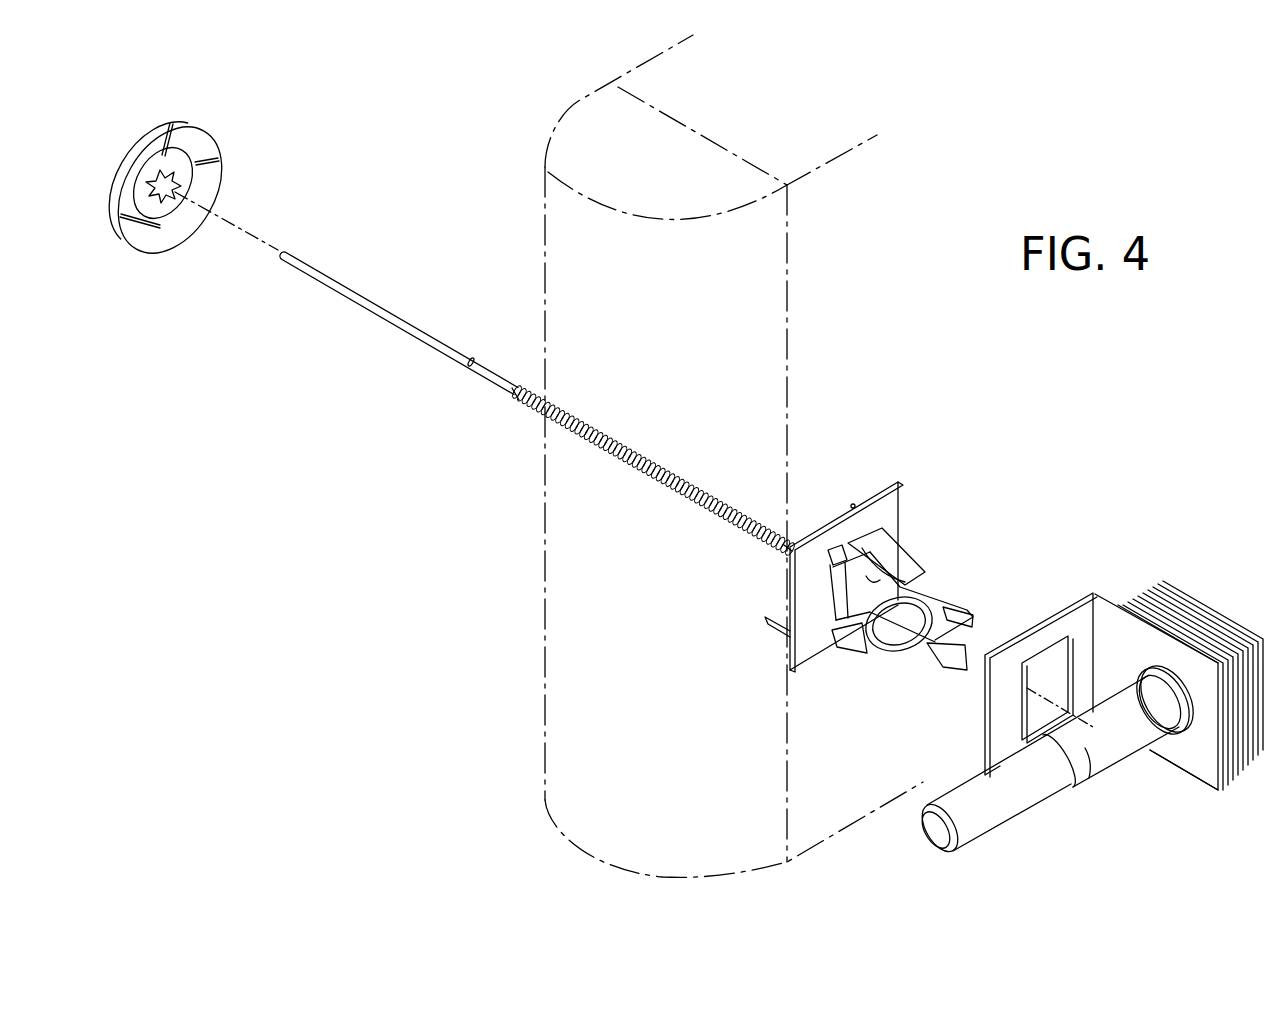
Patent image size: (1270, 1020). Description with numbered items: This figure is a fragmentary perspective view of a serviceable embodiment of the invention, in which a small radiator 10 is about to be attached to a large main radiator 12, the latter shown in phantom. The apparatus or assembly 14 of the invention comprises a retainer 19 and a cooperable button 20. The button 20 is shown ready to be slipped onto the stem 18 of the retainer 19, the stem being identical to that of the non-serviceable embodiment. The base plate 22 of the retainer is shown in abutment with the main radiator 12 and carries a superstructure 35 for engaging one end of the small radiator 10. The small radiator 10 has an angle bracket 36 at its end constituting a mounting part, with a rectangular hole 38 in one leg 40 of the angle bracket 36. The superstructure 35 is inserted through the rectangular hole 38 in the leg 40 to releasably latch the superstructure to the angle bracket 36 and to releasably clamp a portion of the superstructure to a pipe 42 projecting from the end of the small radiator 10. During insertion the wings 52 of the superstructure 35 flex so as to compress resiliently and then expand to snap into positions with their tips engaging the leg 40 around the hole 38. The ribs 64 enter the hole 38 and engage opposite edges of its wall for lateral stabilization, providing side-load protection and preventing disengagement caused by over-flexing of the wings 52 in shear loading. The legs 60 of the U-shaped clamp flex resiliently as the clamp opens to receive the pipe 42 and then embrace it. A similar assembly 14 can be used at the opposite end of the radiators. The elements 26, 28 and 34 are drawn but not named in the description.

The small radiator 10 is at (1203, 563).
The main radiator 12 is at (742, 328).
The apparatus or assembly 14 is at (240, 126).
The stem 18 is at (508, 405).
The retainer 19 is at (746, 541).
The button 20 is at (128, 265).
The base plate 22 is at (893, 502).
The spring 26 is at (668, 490).
The pin shaft 28 is at (366, 314).
The plate tab 34 is at (853, 504).
The superstructure 35 is at (885, 603).
The angle bracket 36 is at (1061, 657).
The rectangular hole 38 is at (1035, 703).
The leg 40 is at (998, 732).
The pipe 42 is at (1103, 757).
The wings 52 is at (895, 560).
The legs 60 is at (935, 598).
The ribs 64 is at (834, 566).